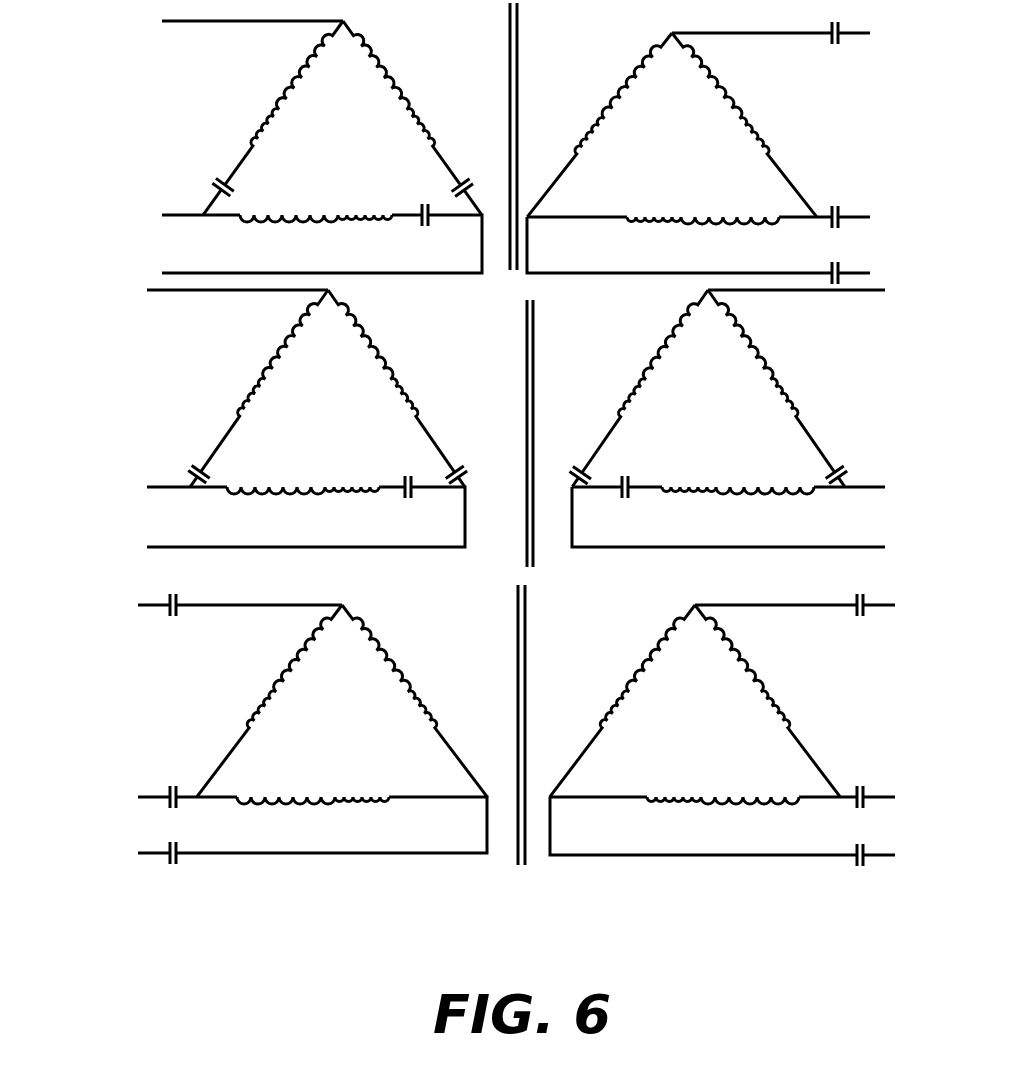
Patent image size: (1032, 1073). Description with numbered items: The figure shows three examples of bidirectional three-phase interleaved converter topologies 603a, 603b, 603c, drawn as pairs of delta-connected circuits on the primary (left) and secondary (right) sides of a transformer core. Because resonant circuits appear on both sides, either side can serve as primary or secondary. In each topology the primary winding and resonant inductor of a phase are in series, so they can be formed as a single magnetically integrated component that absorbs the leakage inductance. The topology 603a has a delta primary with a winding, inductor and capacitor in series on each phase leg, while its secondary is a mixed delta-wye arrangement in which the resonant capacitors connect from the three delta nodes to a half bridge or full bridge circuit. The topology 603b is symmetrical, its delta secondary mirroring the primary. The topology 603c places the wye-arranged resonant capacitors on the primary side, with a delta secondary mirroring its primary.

The bidirectional three-phase interleaved converter topology 603a is at (130, 87).
The bidirectional three-phase interleaved converter topology 603b is at (130, 390).
The bidirectional three-phase interleaved converter topology 603c is at (130, 686).